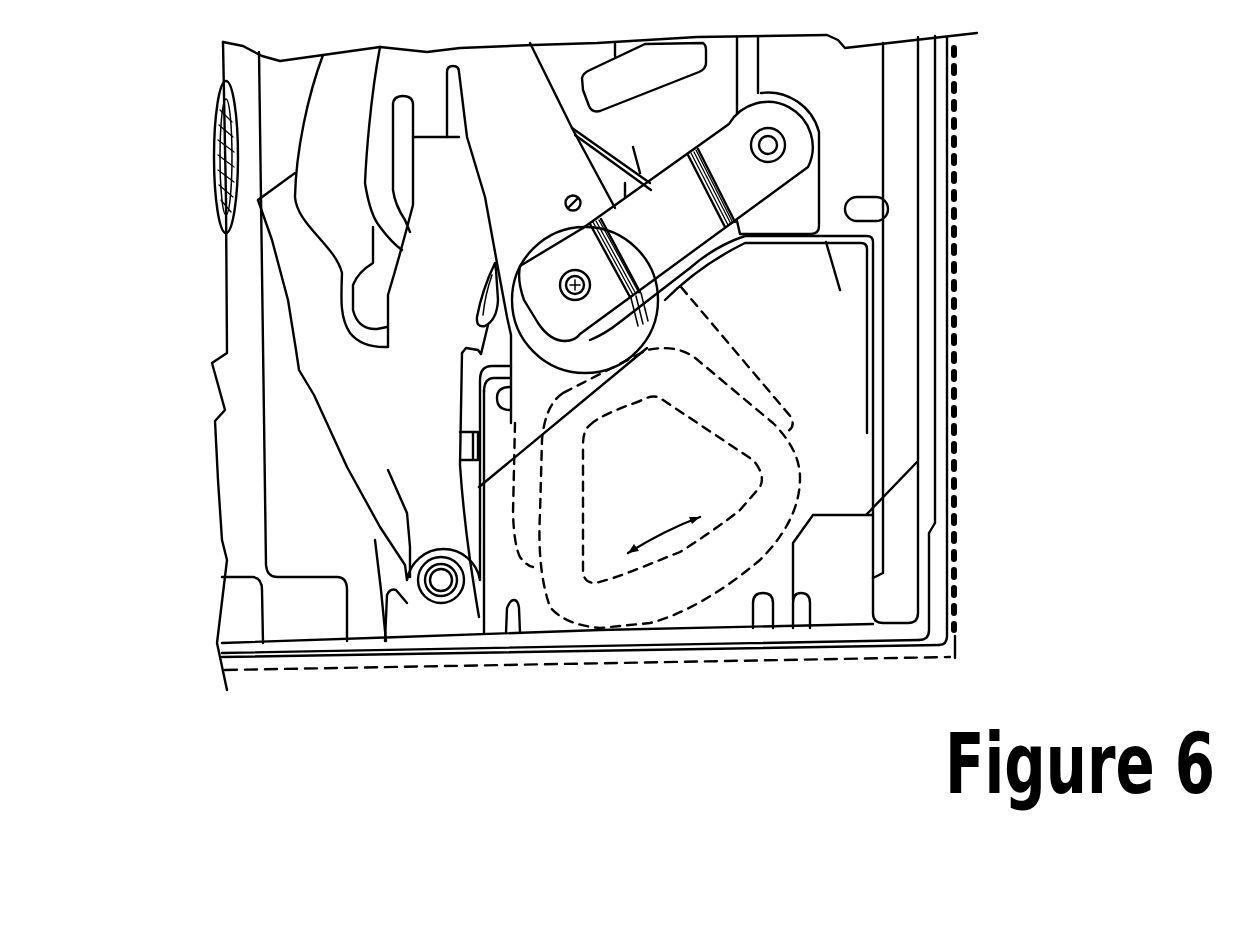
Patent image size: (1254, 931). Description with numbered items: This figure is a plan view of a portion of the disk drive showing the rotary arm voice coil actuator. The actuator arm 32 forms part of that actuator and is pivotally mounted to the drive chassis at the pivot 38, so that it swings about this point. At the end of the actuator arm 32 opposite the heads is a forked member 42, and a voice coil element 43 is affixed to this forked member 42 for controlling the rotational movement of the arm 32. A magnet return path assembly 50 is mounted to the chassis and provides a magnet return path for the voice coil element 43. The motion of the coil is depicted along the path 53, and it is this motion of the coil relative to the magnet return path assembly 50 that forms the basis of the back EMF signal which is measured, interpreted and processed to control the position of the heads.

The actuator arm 32 is at (569, 103).
The pivot 38 is at (556, 281).
The forked member 42 is at (532, 380).
The voice coil element 43 is at (593, 480).
The magnet return path assembly 50 is at (468, 619).
The path 53 is at (661, 543).